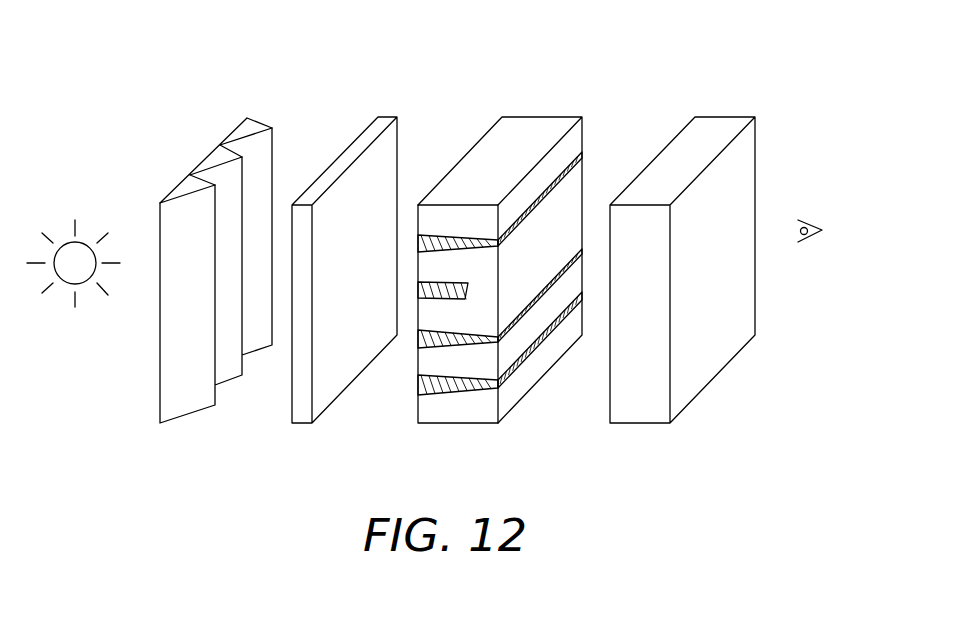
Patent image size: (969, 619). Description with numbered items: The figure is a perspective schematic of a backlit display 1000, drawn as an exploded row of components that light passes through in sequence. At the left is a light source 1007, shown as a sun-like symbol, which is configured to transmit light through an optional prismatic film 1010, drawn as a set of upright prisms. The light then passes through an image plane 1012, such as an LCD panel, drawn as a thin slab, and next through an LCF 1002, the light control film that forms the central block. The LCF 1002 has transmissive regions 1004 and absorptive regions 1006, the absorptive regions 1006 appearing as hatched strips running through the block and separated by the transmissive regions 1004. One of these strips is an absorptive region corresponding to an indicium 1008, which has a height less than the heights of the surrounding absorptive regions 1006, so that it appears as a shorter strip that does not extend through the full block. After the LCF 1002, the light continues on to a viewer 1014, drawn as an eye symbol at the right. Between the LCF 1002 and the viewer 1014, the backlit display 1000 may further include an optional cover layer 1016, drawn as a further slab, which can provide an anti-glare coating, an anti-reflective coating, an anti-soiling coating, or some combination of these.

The backlit display 1000 is at (161, 96).
The LCF 1002 is at (528, 128).
The transmissive regions 1004 is at (465, 365).
The absorptive regions 1006 is at (430, 350).
The indicium 1008 is at (450, 282).
The light source 1007 is at (84, 244).
The prismatic film 1010 is at (247, 116).
The image plane 1012 is at (377, 117).
The viewer 1014 is at (810, 222).
The cover layer 1016 is at (716, 128).